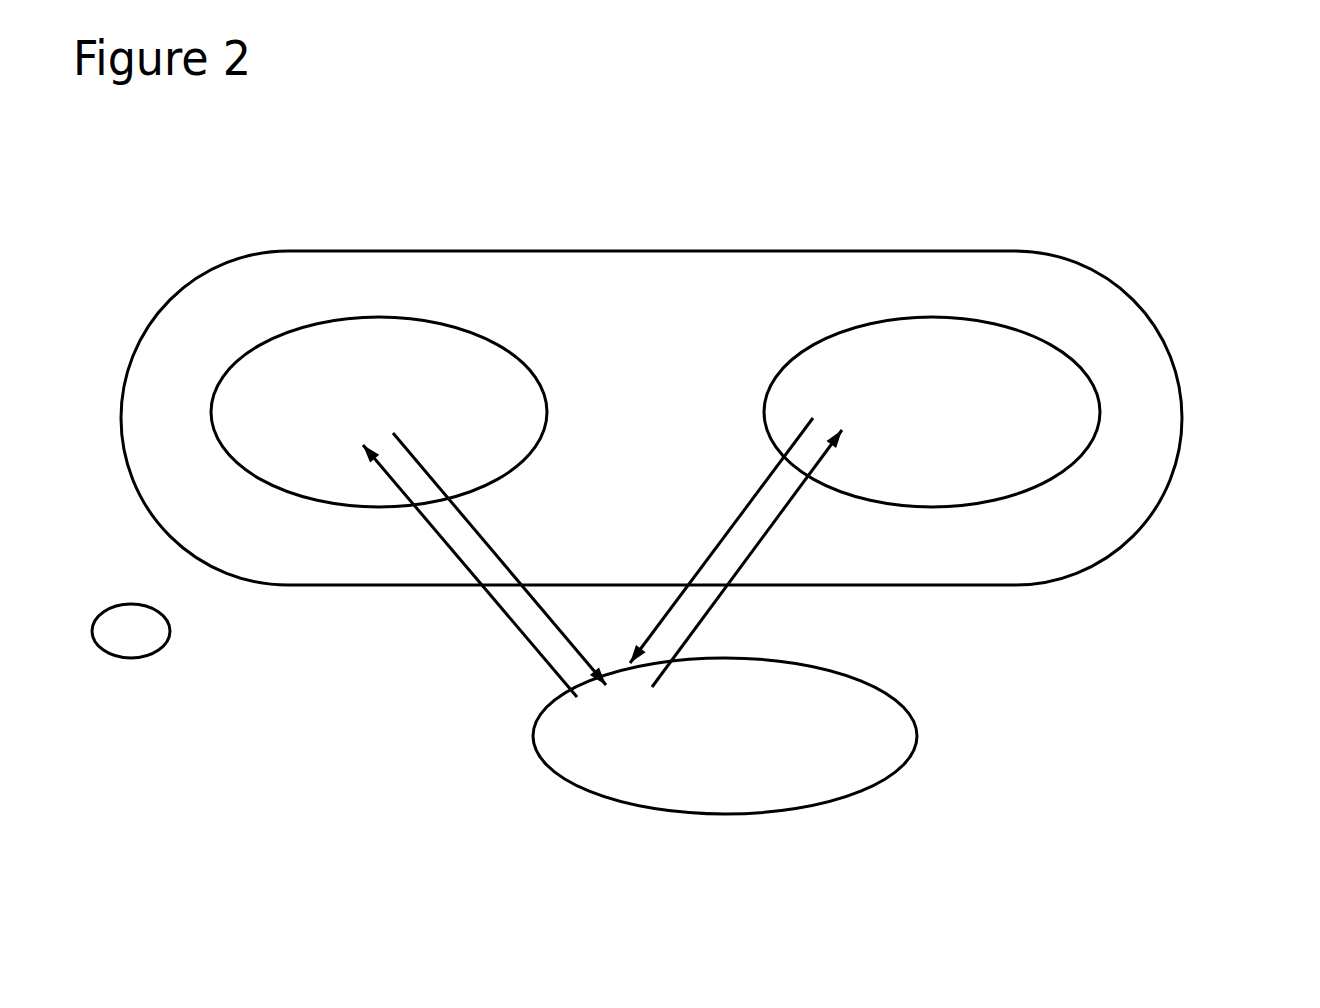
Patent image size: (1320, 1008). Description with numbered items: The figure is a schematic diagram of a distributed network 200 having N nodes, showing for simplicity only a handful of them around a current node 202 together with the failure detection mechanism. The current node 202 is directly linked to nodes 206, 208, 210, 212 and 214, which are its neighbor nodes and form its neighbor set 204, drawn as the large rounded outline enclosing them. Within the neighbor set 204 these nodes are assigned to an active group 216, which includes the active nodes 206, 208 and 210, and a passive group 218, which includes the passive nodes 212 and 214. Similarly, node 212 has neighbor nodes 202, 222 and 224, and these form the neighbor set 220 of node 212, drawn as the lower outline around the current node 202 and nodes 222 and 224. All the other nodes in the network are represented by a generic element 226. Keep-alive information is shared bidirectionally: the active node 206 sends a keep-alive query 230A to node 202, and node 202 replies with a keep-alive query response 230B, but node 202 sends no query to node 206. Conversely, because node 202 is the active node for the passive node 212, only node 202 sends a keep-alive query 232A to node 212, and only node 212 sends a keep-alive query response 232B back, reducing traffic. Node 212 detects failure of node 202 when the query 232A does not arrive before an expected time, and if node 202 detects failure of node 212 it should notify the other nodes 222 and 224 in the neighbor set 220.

The distributed network 200 is at (731, 117).
The current node 202 is at (627, 720).
The neighbor set N(x) 204 is at (1162, 335).
The node 206 is at (326, 388).
The node 208 is at (368, 390).
The node 210 is at (413, 388).
The node 212 is at (898, 377).
The node 214 is at (950, 383).
The active group 216 is at (318, 500).
The passive group 218 is at (998, 500).
The neighbor set N(Z) 220 is at (840, 790).
The node 222 is at (685, 722).
The node 224 is at (717, 693).
The generic element 226 is at (113, 657).
The keep-alive query 230A is at (488, 542).
The keep-alive query response 230B is at (455, 557).
The keep-alive query 232A is at (767, 537).
The keep-alive query response 232B is at (767, 483).